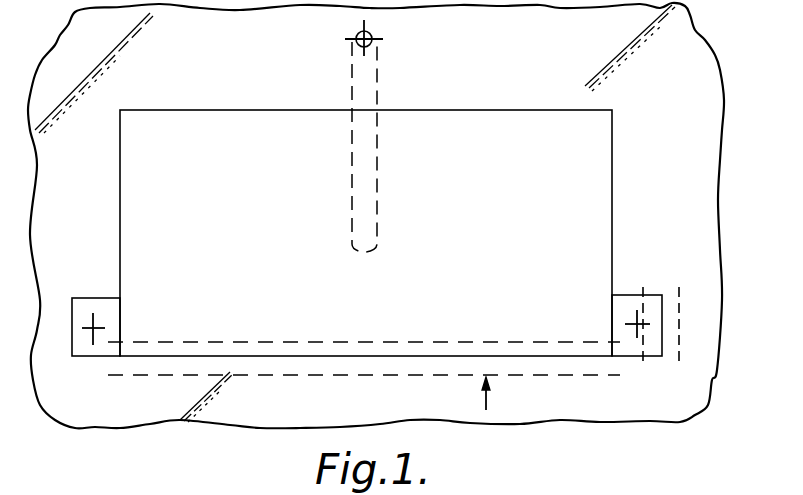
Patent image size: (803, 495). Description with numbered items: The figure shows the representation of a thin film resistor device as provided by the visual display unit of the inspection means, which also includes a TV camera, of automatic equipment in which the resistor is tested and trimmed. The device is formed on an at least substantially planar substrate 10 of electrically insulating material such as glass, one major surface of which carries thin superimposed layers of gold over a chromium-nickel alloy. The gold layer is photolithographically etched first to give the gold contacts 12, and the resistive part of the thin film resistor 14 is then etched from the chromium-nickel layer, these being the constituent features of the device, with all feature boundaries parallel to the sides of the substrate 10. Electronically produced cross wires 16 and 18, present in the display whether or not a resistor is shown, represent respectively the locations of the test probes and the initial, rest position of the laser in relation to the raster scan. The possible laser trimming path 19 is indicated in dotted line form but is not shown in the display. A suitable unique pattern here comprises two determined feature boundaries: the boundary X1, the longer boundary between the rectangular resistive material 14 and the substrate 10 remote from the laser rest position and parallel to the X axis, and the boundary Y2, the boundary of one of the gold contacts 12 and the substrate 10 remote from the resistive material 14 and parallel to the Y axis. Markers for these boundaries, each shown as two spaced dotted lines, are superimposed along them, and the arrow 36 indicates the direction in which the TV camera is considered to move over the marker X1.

The substrate 10 is at (535, 72).
The gold contacts 12 is at (93, 352).
The resistive part of the thin film resistor 14 is at (256, 249).
The cross wires representing test probe locations 16 is at (88, 322).
The cross wire representing laser rest position 18 is at (371, 33).
The laser trimming path 19 is at (378, 147).
The arrow 36 is at (488, 402).
The determined feature boundary X1 is at (412, 378).
The determined feature boundary Y2 is at (678, 351).